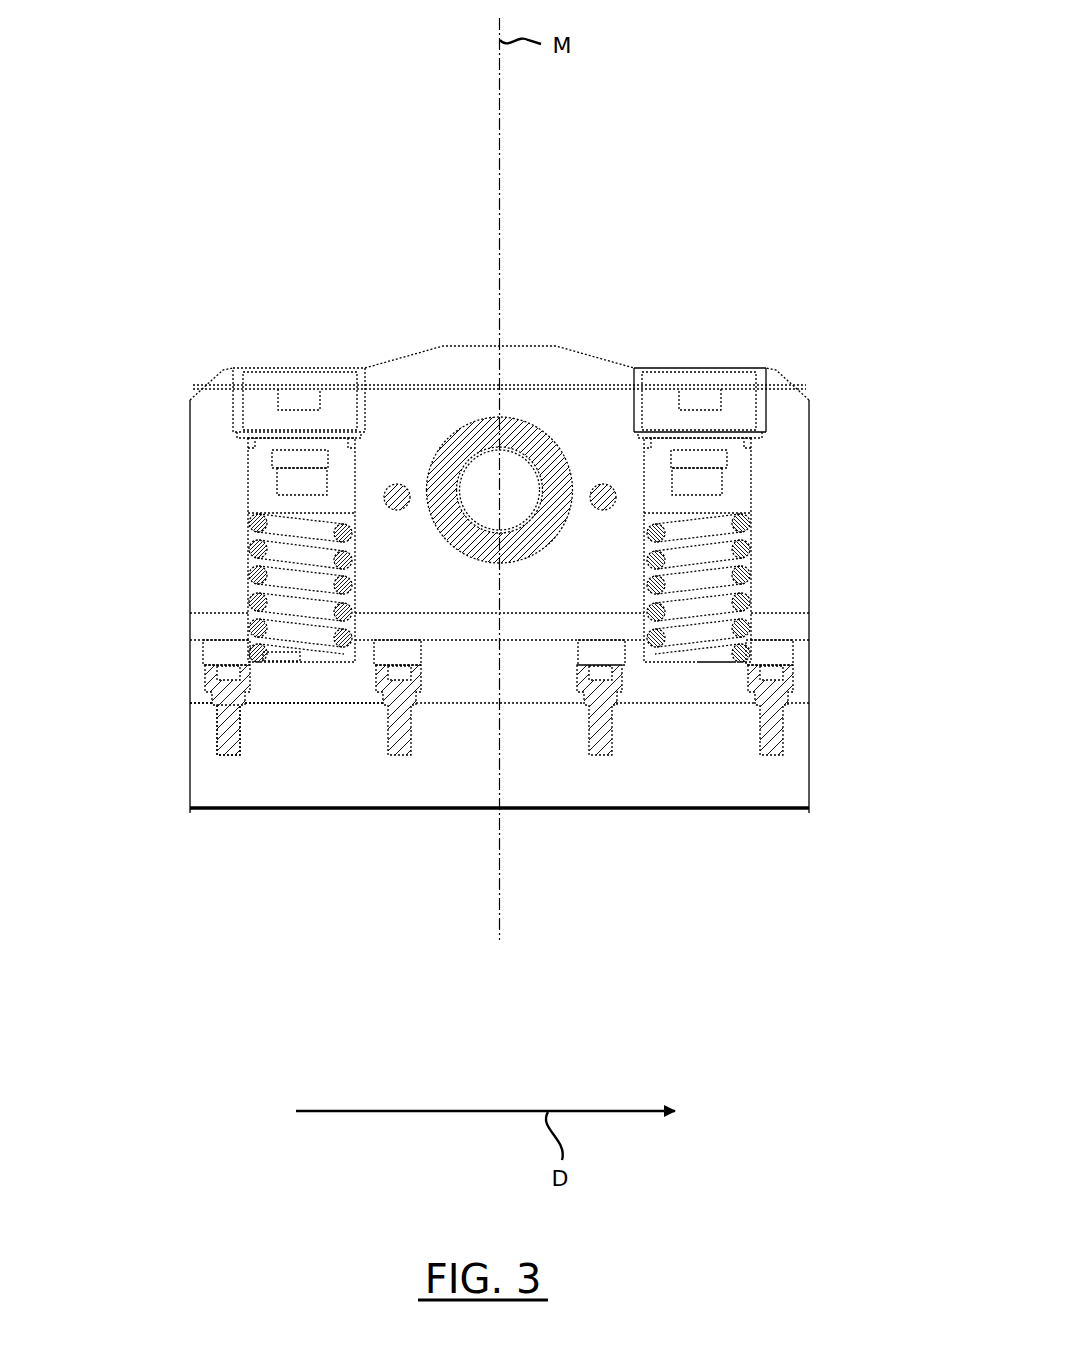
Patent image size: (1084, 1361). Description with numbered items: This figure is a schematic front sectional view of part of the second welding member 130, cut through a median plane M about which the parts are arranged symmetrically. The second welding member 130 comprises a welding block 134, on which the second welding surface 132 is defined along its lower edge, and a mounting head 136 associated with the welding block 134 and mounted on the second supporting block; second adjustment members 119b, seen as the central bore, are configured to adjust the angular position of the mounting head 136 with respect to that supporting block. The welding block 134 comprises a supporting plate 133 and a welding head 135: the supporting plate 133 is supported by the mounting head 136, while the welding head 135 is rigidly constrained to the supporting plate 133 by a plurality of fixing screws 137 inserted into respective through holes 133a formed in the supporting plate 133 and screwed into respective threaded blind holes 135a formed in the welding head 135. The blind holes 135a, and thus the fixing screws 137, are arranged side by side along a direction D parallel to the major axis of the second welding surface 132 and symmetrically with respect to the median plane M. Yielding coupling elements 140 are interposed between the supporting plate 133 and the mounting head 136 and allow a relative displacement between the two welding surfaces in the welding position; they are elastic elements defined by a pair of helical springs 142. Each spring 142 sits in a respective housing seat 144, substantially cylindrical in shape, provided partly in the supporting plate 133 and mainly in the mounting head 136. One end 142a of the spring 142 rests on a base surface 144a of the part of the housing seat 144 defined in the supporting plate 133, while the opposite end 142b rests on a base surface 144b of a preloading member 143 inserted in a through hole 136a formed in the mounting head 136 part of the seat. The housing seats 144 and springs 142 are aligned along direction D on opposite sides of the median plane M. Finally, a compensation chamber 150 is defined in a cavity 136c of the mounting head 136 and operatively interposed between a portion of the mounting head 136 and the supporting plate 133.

The second adjustment members 119b is at (457, 412).
The second welding member 130 is at (395, 262).
The second welding surface 132 is at (258, 808).
The supporting plate 133 is at (509, 674).
The through holes 133a is at (203, 680).
The welding block 134 is at (817, 705).
The welding head 135 is at (509, 749).
The threaded blind holes 135a is at (217, 740).
The mounting head 136 is at (519, 345).
The through hole 136a is at (763, 410).
The cavity 136c is at (552, 628).
The fixing screws 137 is at (248, 733).
The yielding coupling elements 140 is at (247, 528).
The helical springs 142 is at (290, 578).
The end of the spring 142a is at (317, 663).
The opposite end of the spring 142b is at (257, 517).
The preloading member 143 is at (232, 425).
The housing seat 144 is at (303, 557).
The base surface 144a is at (292, 657).
The base surface of the preloading member 144b is at (339, 513).
The compensation chamber 150 is at (452, 634).